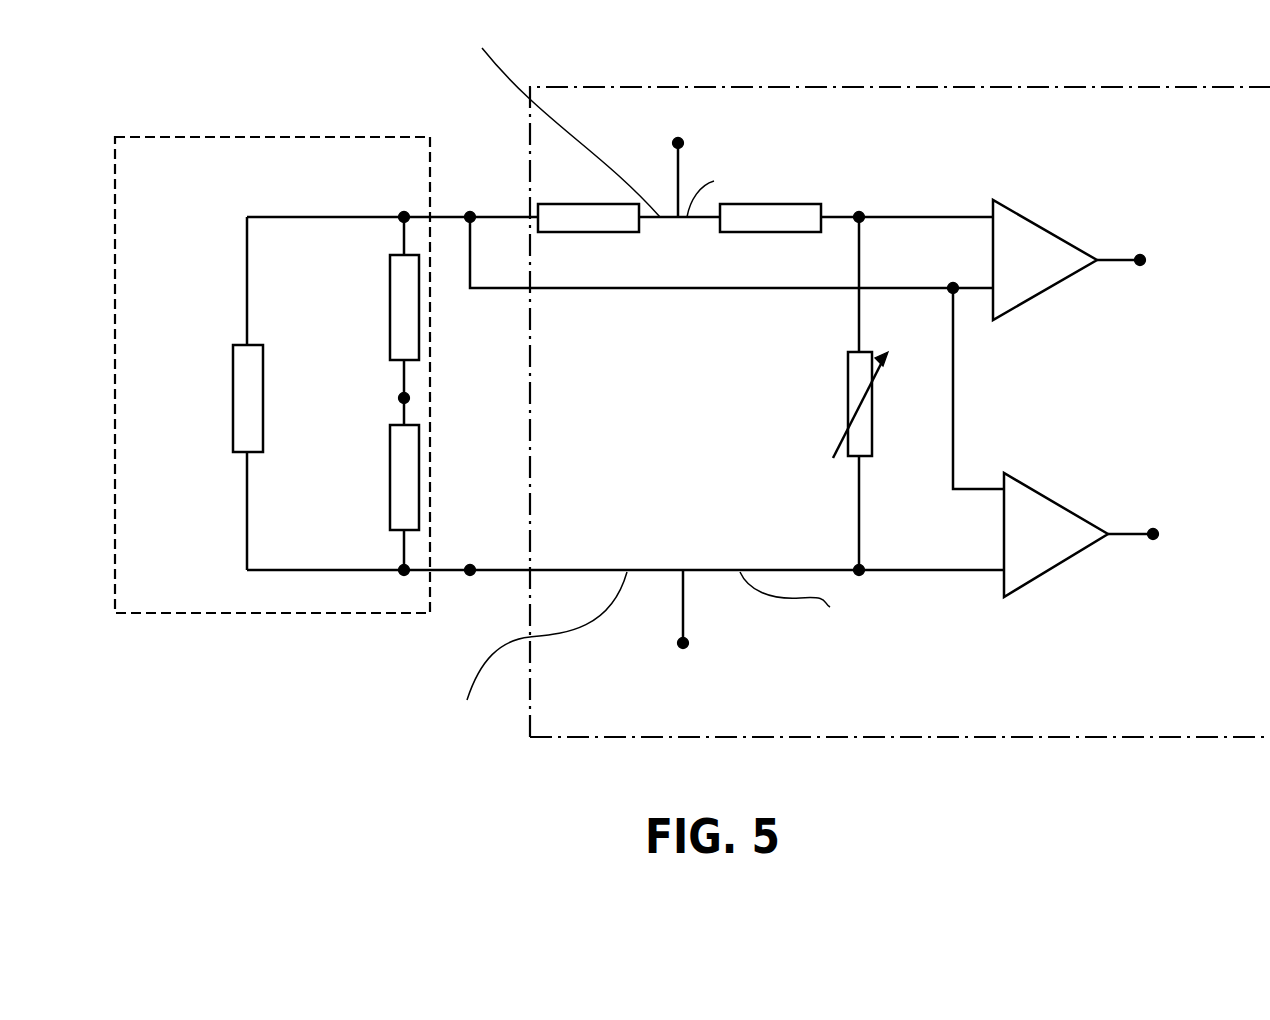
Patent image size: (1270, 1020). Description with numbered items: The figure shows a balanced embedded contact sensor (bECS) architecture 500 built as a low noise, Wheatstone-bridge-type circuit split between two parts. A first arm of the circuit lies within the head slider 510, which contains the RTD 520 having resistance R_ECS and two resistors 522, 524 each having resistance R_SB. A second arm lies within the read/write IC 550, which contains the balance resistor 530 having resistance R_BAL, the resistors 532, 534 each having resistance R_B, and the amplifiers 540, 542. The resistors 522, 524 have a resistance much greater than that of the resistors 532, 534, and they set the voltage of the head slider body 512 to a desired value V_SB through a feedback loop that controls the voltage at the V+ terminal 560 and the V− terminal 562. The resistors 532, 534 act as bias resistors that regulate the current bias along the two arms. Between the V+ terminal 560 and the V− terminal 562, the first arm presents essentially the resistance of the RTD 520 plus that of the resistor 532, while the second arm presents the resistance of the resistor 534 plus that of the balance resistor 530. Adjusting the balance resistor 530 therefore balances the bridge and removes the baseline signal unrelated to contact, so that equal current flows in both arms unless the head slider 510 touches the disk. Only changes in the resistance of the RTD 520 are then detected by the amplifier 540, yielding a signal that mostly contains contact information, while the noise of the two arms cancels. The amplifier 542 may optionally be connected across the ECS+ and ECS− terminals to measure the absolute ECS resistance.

The balanced embedded contact sensor (bECS) architecture 500 is at (1007, 819).
The head slider 510 is at (347, 137).
The head slider body 512 is at (410, 397).
The RTD 520 is at (233, 390).
The resistor 522 is at (390, 287).
The resistor 524 is at (390, 463).
The balance resistor 530 is at (848, 372).
The resistor 532 is at (583, 203).
The resistor 534 is at (823, 209).
The amplifier 540 is at (1041, 221).
The amplifier 542 is at (1045, 493).
The read/write IC 550 is at (1126, 62).
The V+ terminal 560 is at (672, 143).
The V− terminal 562 is at (689, 646).